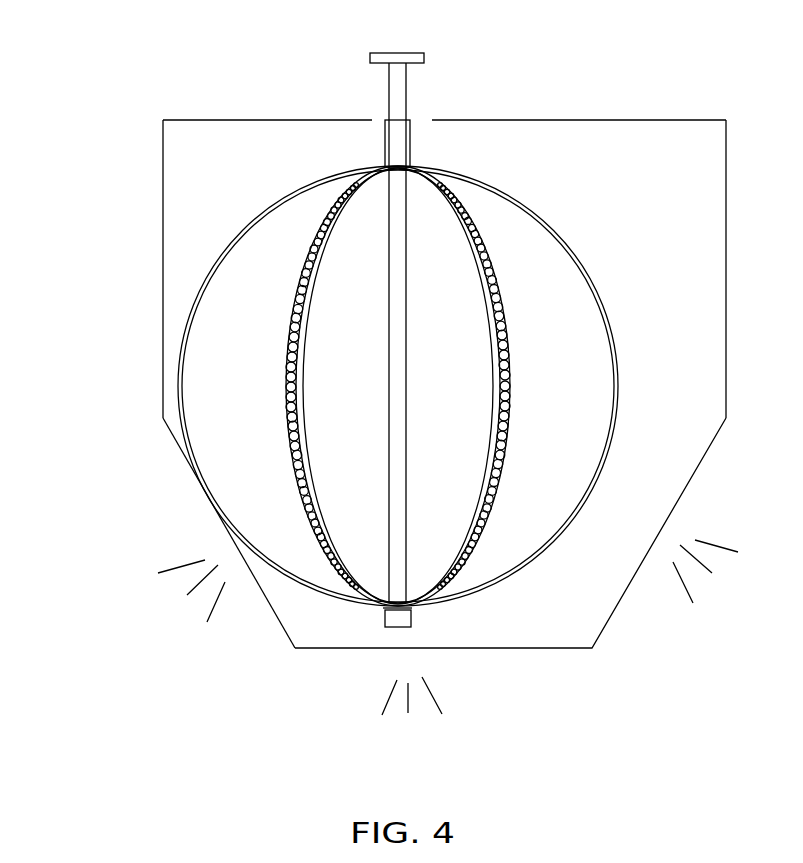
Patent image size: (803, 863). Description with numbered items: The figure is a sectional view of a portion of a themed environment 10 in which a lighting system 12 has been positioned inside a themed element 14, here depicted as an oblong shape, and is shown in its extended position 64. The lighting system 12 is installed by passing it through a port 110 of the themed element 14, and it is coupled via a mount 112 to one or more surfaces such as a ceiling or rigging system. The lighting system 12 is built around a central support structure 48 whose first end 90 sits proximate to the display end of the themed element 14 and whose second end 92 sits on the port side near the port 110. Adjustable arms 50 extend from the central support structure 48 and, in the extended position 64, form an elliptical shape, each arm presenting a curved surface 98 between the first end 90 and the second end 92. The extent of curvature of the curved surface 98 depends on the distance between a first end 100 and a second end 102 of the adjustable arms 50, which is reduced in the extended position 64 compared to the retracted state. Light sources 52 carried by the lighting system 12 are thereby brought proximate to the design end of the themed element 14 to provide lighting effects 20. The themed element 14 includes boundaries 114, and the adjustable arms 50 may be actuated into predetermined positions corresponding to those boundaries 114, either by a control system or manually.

The themed environment 10 is at (64, 94).
The lighting system 12 is at (264, 195).
The themed element 14 is at (180, 119).
The lighting effects 20 is at (348, 693).
The central support structure 48 is at (388, 92).
The adjustable arms 50 is at (495, 323).
The light sources 52 is at (509, 398).
The extended position 64 is at (558, 673).
The first end 90 is at (419, 620).
The second end 92 is at (343, 42).
The curved surface 98 is at (631, 397).
The first end of the adjustable arms 100 is at (370, 619).
The second end of the adjustable arms 102 is at (426, 163).
The port 110 is at (413, 117).
The mount 112 is at (397, 53).
The boundaries 114 is at (197, 486).